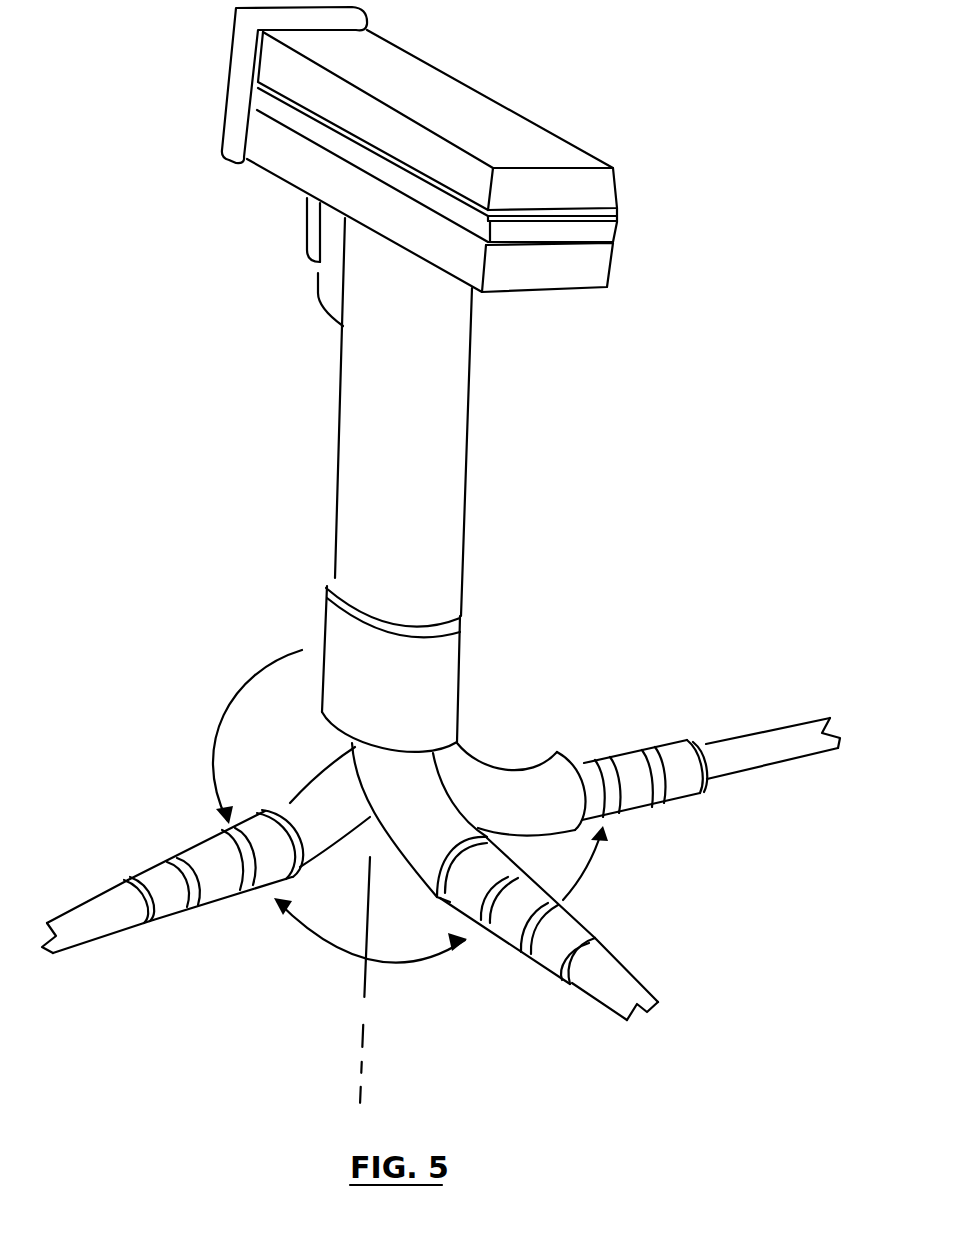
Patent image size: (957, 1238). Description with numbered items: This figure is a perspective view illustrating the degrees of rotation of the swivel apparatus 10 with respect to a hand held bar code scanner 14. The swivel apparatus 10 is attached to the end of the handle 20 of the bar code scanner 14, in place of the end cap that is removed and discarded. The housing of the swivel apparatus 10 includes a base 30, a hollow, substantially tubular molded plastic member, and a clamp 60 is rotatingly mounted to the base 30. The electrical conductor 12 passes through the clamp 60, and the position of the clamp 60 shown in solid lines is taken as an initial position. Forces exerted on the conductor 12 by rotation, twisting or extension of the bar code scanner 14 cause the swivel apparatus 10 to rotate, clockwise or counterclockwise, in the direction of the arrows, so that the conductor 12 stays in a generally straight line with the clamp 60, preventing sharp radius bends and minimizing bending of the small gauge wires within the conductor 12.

The bar code scanner 14 is at (288, 223).
The handle 20 is at (380, 415).
The base 30 is at (292, 608).
The swivel apparatus 10 is at (498, 762).
The clamp 60 is at (386, 785).
The electrical conductor 12 is at (620, 975).